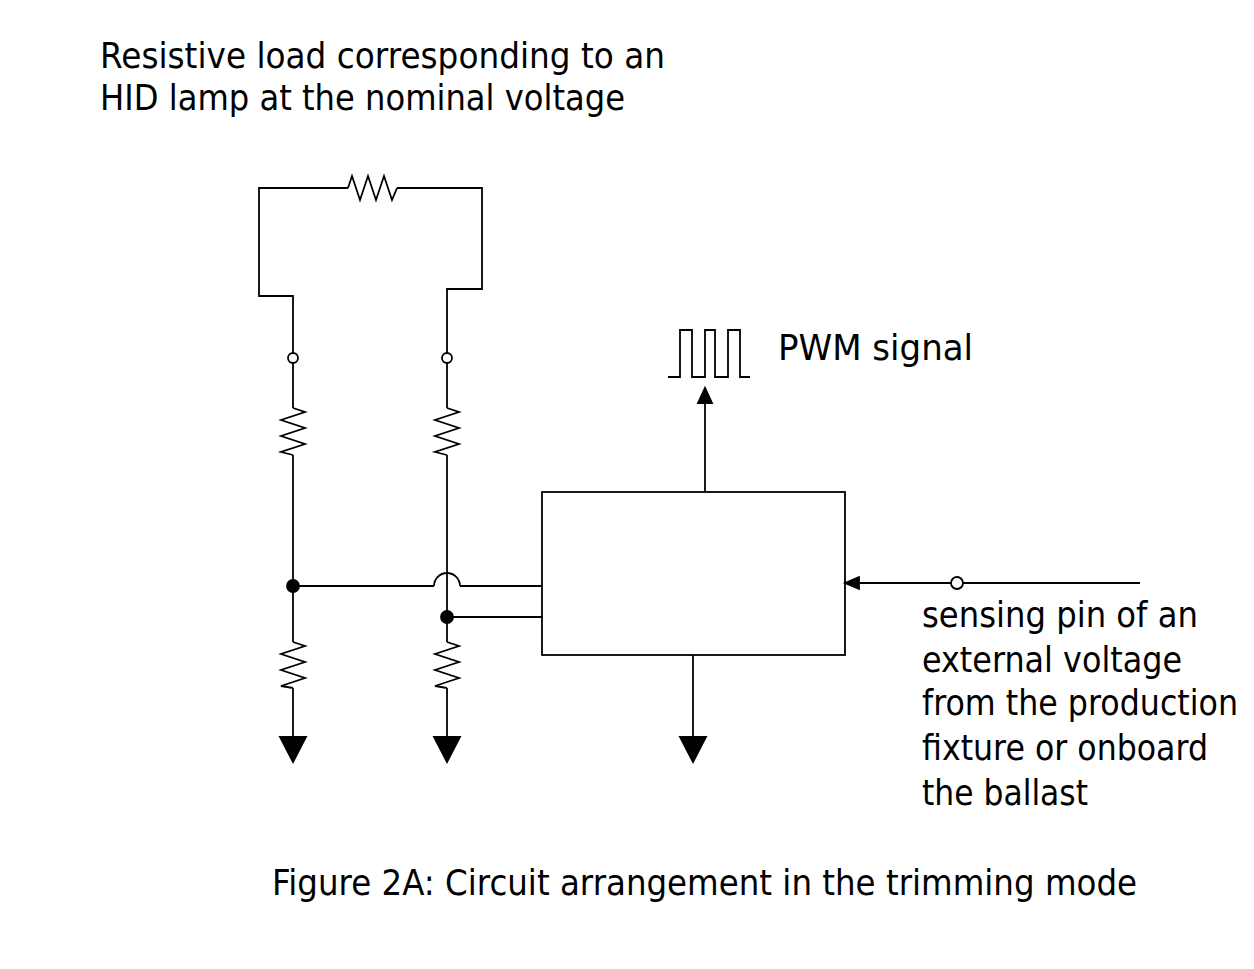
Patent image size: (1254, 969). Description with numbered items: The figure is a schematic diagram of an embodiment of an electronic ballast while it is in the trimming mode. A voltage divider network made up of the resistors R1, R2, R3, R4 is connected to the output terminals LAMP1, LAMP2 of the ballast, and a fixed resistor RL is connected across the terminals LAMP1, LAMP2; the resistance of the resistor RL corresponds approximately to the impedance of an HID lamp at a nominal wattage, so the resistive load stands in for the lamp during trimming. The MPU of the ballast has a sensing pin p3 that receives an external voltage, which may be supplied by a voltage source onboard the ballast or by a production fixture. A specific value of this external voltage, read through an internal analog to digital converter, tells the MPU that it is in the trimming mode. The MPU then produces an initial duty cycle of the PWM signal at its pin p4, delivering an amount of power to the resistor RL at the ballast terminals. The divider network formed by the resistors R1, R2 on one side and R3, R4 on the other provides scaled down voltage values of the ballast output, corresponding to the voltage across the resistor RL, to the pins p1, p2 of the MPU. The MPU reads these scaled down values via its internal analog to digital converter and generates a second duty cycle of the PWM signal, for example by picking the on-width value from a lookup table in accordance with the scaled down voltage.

The fixed resistor RL is at (372, 159).
The output terminal LAMP1 is at (222, 334).
The output terminal LAMP2 is at (515, 333).
The resistor R1 is at (263, 431).
The resistor R2 is at (263, 668).
The resistor R3 is at (416, 431).
The resistor R4 is at (417, 668).
The element MPU is at (693, 573).
The MPU sensing pin 1 p1 is at (435, 579).
The MPU sensing pin 2 p2 is at (512, 625).
The MPU external voltage sensing pin p3 is at (971, 601).
The MPU PWM output pin p4 is at (717, 459).